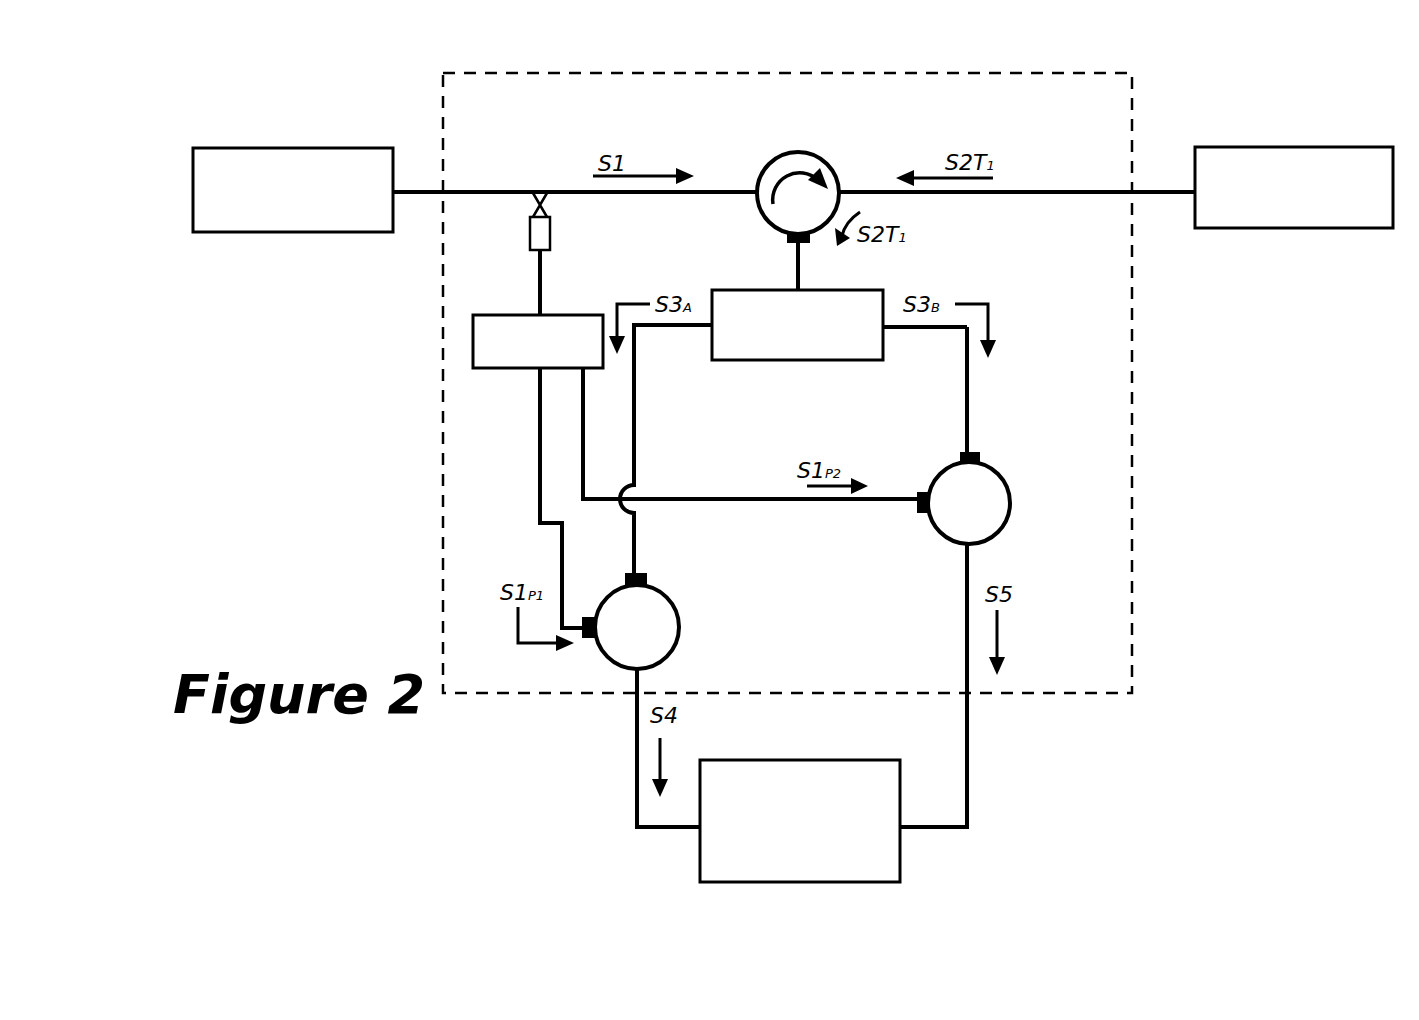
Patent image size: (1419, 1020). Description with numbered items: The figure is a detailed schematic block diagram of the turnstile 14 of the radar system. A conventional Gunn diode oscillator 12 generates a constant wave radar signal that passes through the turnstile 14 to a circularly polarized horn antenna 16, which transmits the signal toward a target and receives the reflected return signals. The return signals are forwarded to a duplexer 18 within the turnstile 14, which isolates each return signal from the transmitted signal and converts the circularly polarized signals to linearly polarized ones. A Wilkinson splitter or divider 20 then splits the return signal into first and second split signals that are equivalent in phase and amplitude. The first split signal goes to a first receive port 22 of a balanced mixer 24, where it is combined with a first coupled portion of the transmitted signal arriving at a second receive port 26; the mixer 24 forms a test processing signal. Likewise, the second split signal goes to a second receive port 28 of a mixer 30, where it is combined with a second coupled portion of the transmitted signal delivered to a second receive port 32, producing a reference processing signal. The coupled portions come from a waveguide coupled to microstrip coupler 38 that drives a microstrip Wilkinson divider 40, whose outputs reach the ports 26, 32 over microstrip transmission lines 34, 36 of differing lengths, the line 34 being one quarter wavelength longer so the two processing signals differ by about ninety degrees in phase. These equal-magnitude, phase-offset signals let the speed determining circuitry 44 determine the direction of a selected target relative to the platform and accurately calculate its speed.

The oscillator 12 is at (325, 148).
The turnstile 14 is at (803, 72).
The antenna 16 is at (1240, 147).
The duplexer 18 is at (792, 157).
The divider 20 is at (870, 290).
The first receive port 22 is at (648, 580).
The mixer 24 is at (680, 622).
The second receive port 26 is at (588, 640).
The second receive port 28 is at (975, 452).
The mixer 30 is at (1005, 525).
The second receive port 32 is at (924, 515).
The microstrip transmission line 34 is at (561, 543).
The microstrip transmission line 36 is at (740, 497).
The waveguide coupled to microstrip coupler 38 is at (528, 238).
The microstrip Wilkinson divider 40 is at (563, 317).
The speed determining circuitry 44 is at (700, 855).